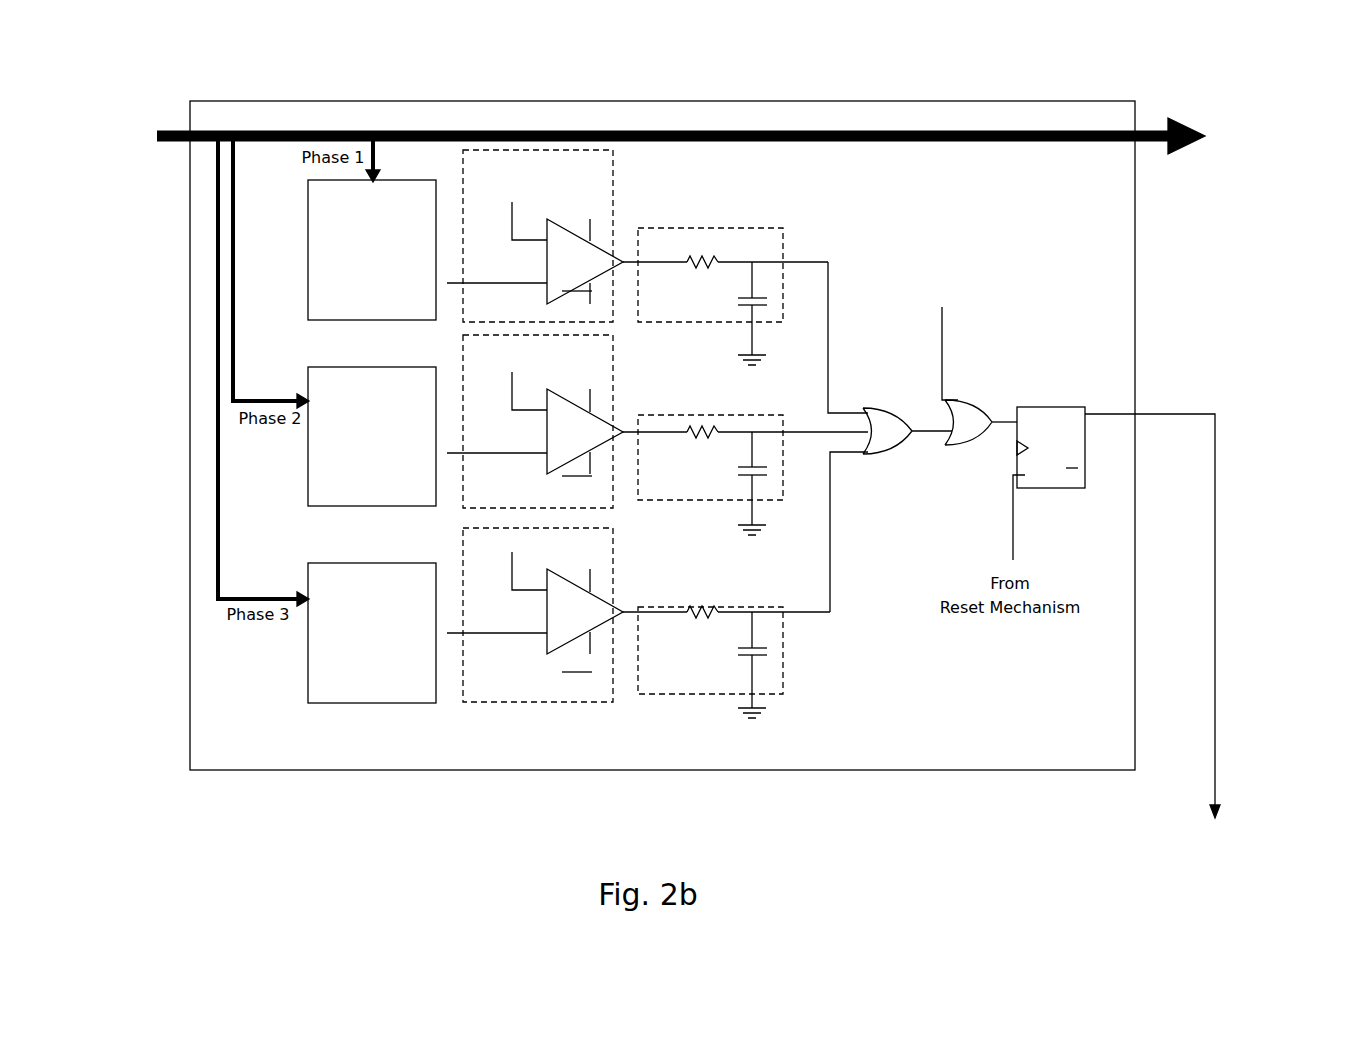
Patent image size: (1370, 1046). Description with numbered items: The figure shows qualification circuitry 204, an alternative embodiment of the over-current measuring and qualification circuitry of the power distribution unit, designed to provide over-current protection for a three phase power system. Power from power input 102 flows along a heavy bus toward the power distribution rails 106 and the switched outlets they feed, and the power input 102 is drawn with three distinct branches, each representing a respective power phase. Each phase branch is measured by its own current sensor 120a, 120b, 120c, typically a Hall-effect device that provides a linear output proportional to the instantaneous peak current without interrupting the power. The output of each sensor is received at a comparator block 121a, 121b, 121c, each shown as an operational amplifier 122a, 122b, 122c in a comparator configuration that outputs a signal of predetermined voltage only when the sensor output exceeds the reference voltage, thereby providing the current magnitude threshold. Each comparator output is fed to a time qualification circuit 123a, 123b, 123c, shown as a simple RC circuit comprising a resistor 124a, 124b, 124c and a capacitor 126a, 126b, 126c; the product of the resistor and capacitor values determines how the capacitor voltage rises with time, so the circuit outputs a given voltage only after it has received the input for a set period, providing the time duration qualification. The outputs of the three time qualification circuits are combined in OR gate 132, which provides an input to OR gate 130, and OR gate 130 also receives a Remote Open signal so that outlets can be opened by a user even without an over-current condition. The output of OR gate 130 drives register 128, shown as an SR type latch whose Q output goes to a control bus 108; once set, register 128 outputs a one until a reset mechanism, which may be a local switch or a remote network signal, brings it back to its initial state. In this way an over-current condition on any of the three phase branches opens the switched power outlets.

The qualification circuitry 204 is at (675, 101).
The power input 102 is at (636, 158).
The power distribution rails 106 is at (1250, 152).
The control bus 108 is at (1159, 646).
The current sensor 120a is at (372, 250).
The current sensor 120b is at (372, 436).
The current sensor 120c is at (372, 633).
The comparator block 121a is at (574, 233).
The comparator block 121b is at (574, 419).
The comparator block 121c is at (574, 615).
The operational amplifier 122a is at (578, 261).
The operational amplifier 122b is at (578, 431).
The operational amplifier 122c is at (625, 551).
The time qualification circuit 123a is at (756, 269).
The time qualification circuit 123b is at (753, 448).
The time qualification circuit 123c is at (734, 635).
The resistor 124a is at (694, 230).
The resistor 124b is at (696, 419).
The resistor 124c is at (696, 611).
The capacitor 126a is at (738, 299).
The capacitor 126b is at (740, 478).
The capacitor 126c is at (744, 672).
The register 128 is at (1058, 447).
The OR gate 130 is at (985, 400).
The OR gate 132 is at (890, 410).